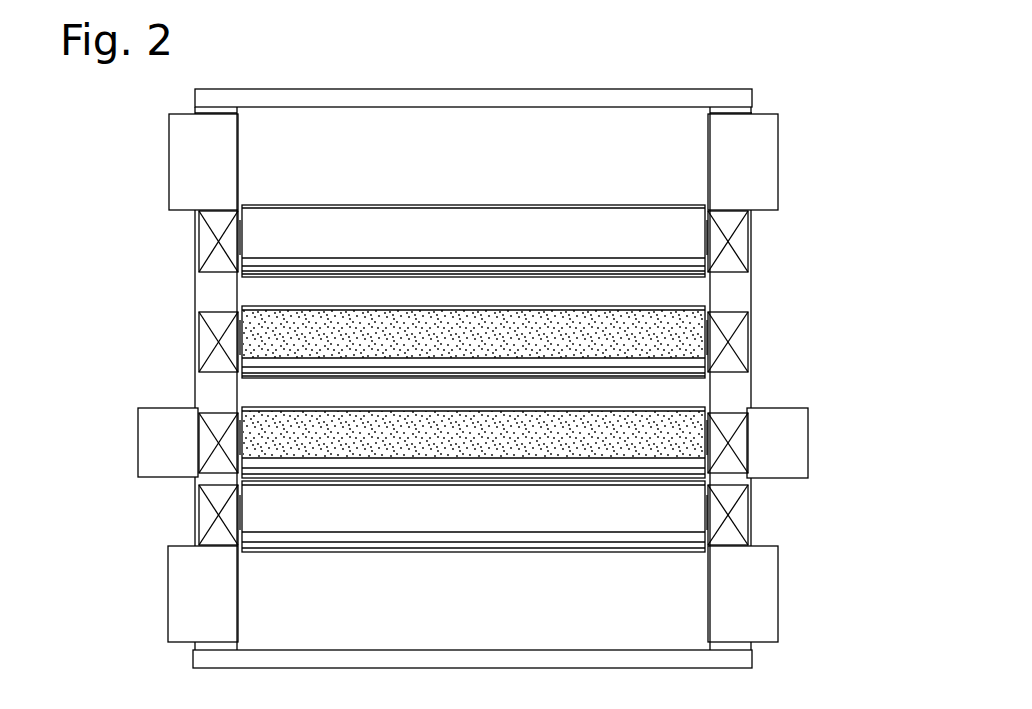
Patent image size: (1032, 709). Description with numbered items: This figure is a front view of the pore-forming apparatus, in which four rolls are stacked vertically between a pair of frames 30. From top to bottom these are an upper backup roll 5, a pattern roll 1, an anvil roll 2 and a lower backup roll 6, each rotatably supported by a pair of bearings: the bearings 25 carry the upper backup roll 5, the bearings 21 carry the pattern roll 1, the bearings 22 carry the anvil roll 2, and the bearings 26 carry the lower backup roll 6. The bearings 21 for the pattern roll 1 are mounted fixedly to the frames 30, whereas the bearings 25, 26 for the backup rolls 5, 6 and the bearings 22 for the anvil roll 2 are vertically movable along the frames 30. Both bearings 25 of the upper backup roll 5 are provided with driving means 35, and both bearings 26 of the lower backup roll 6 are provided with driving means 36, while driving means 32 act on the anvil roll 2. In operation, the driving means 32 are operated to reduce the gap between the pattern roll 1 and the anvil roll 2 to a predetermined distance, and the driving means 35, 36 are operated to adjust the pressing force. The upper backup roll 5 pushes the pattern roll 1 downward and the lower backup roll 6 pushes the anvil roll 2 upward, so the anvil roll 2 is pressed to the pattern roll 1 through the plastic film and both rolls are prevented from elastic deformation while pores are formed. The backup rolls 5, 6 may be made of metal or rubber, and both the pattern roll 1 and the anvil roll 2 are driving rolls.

The pattern roll 1 is at (700, 312).
The anvil roll 2 is at (683, 420).
The backup roll 5 is at (685, 243).
The backup roll 6 is at (685, 518).
The bearing 21 is at (203, 343).
The bearing 22 is at (204, 430).
The bearing 25 is at (203, 241).
The bearing 26 is at (203, 513).
The frame 30 is at (198, 292).
The driving means 32 is at (148, 441).
The driving means 35 is at (178, 160).
The driving means 36 is at (180, 584).